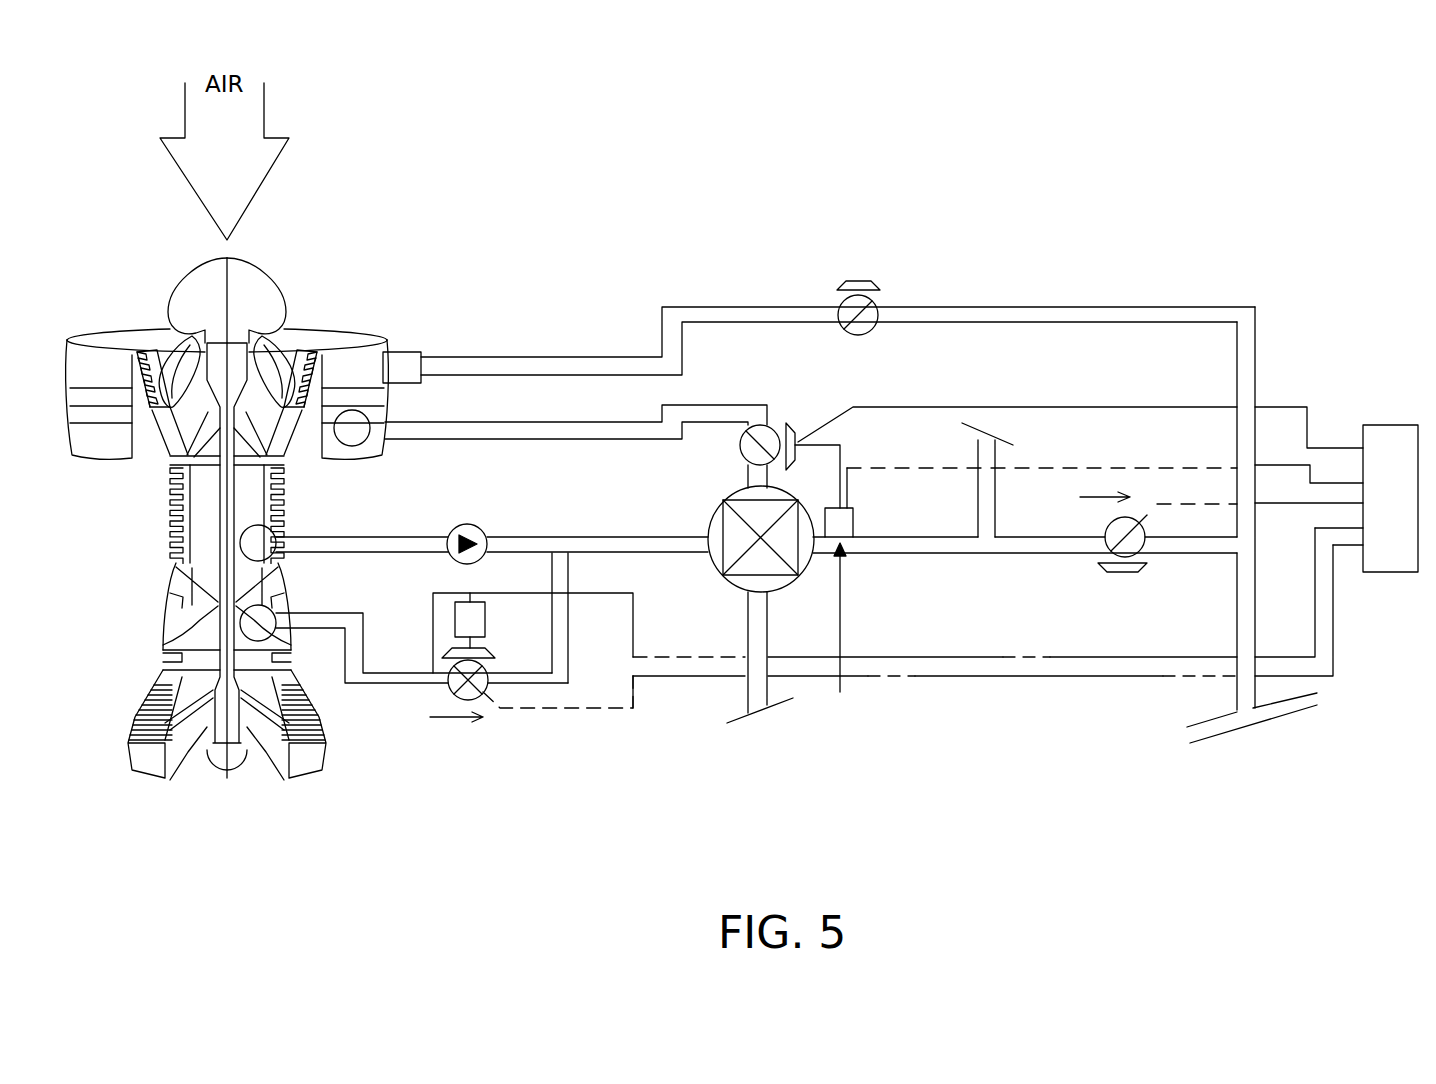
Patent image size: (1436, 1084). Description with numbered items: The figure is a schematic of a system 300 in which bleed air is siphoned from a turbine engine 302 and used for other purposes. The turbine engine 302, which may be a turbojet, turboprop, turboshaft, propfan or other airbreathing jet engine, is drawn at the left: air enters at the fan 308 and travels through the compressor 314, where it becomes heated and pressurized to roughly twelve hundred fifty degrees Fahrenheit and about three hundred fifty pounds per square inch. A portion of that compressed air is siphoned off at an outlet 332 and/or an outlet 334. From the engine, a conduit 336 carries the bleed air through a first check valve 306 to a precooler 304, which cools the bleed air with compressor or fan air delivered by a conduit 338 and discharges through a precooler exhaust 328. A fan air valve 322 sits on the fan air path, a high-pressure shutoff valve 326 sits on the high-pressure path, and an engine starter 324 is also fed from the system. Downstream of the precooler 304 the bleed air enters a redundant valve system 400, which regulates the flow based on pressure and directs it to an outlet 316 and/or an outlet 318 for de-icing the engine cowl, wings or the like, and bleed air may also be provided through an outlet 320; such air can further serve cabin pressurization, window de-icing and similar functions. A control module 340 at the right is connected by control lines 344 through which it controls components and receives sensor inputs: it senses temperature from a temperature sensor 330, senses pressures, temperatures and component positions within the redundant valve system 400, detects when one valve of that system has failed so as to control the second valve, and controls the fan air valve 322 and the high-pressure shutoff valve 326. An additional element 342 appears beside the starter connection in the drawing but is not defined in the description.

The system 300 is at (970, 178).
The turbine engine 302 is at (118, 270).
The precooler 304 is at (740, 525).
The first check valve 306 is at (448, 532).
The fan 308 is at (295, 333).
The compressor 314 is at (152, 420).
The outlet 316 is at (1325, 697).
The outlet 318 is at (1180, 735).
The outlet 320 is at (990, 438).
The fan air valve 322 is at (772, 422).
The engine starter 324 is at (840, 295).
The high-pressure shutoff valve 326 is at (447, 678).
The precooler exhaust 328 is at (760, 710).
The temperature sensor 330 is at (839, 692).
The outlet 332 is at (318, 522).
The outlet 334 is at (314, 615).
The conduit 336 is at (545, 522).
The conduit 338 is at (505, 425).
The control module 340 is at (1395, 438).
The engine starter 342 is at (420, 354).
The control lines 344 is at (1293, 378).
The redundant valve system 400 is at (1106, 540).